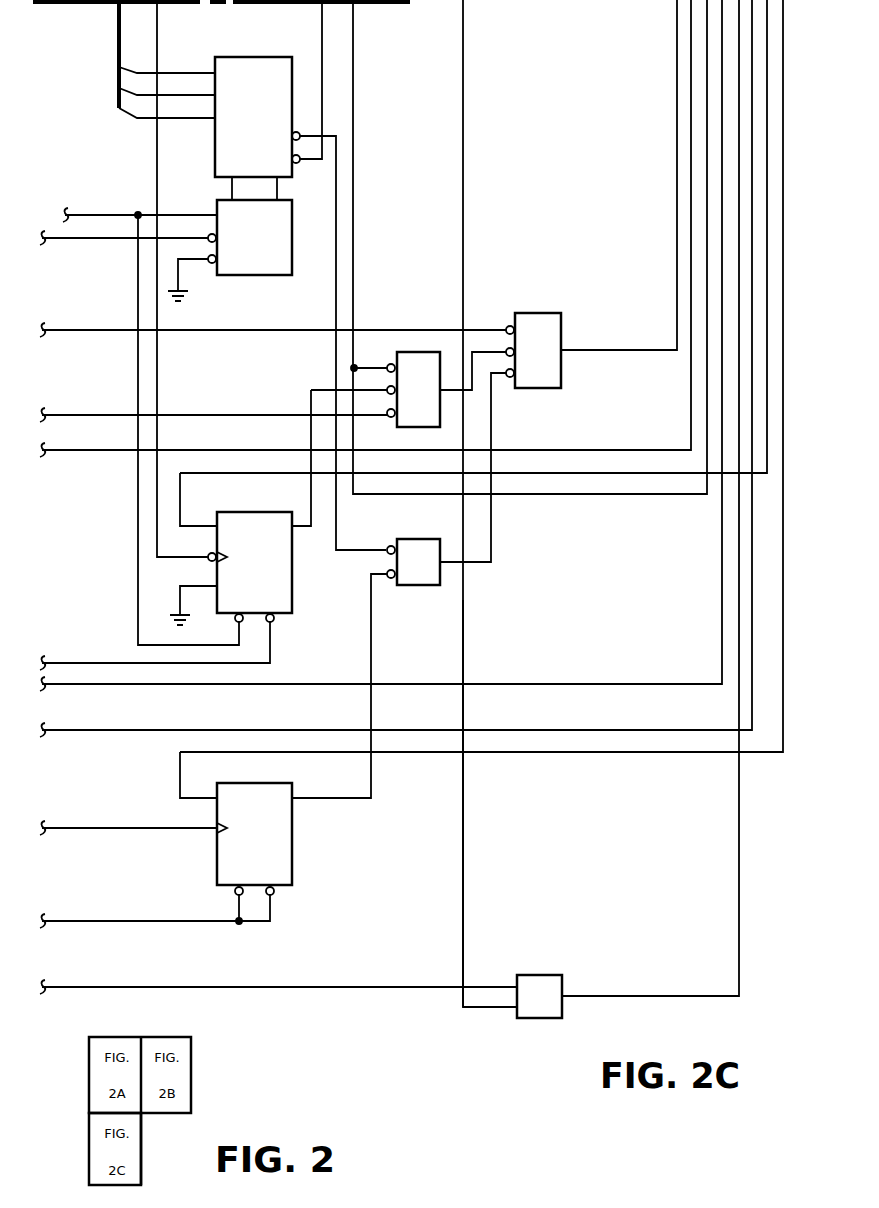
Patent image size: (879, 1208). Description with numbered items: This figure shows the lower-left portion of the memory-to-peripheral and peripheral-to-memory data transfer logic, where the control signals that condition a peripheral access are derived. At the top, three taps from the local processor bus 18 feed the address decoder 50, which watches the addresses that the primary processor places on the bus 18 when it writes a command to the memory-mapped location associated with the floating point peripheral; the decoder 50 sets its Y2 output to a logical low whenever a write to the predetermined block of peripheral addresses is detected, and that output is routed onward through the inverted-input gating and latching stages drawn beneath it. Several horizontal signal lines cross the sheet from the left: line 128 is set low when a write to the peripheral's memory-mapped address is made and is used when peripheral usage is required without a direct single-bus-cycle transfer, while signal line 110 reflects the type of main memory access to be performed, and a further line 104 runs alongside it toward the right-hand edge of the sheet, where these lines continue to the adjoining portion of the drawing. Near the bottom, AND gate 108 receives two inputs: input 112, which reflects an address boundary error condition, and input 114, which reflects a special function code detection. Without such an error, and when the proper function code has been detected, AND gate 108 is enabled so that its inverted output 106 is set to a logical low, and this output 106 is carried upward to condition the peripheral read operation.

The local processor bus 18 is at (118, 33).
The address decoder 50 is at (215, 150).
The signal line 128 is at (108, 452).
The signal line 104 is at (591, 686).
The signal line 110 is at (119, 734).
The special function code detection input 114 is at (462, 857).
The inverted output 106 is at (739, 852).
The AND gate 108 is at (533, 976).
The address boundary error condition input 112 is at (410, 987).